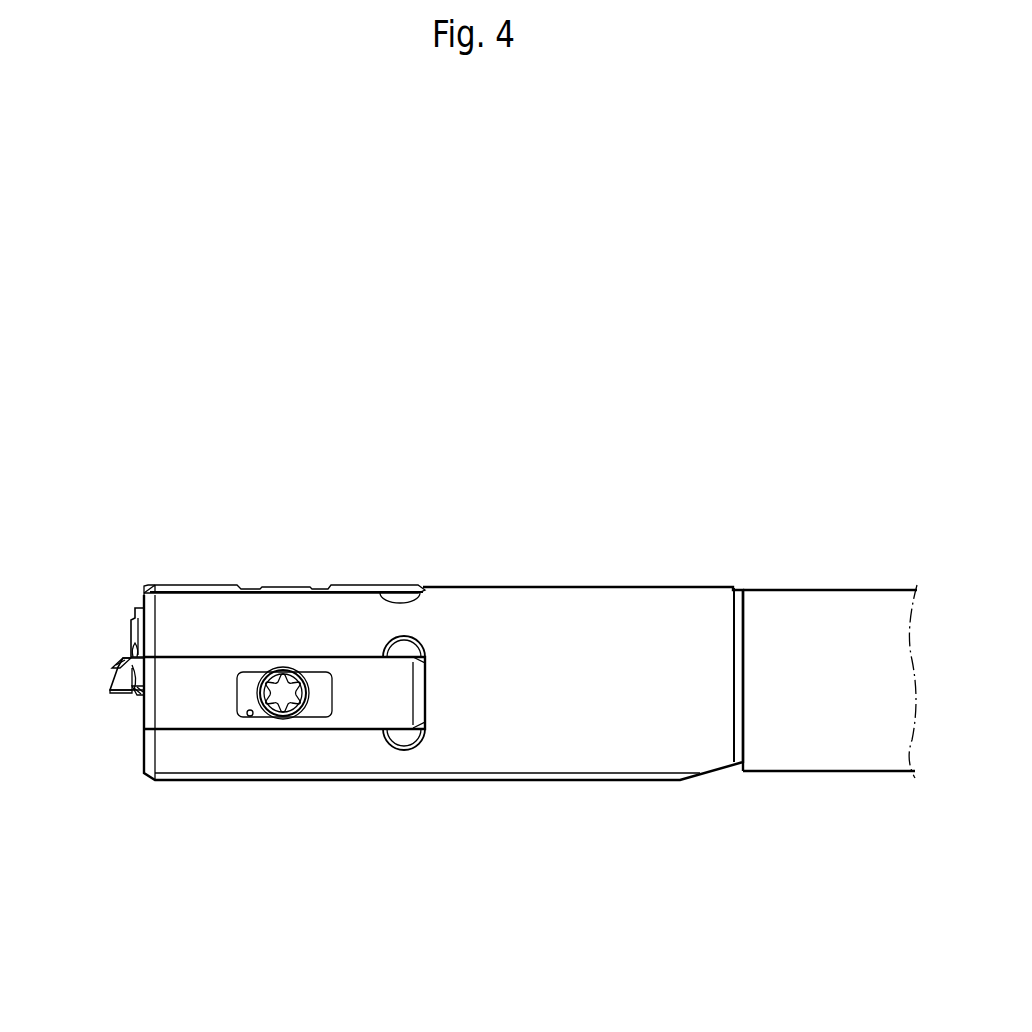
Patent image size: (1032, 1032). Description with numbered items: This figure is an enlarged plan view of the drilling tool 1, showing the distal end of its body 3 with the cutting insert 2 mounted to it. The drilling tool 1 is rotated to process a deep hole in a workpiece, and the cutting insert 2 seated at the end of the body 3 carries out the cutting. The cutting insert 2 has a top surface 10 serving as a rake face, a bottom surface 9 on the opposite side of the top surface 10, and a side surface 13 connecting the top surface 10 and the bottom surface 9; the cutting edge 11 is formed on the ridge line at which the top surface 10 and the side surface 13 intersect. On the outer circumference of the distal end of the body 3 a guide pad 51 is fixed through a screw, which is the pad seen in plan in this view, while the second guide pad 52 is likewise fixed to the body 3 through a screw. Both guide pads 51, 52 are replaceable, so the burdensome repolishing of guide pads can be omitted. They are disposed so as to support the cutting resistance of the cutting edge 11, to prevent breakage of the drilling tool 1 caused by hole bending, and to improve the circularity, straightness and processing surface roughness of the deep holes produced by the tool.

The drilling tool 1 is at (500, 578).
The cutting insert 2 is at (103, 681).
The body 3 is at (642, 586).
The bottom surface 9 is at (124, 658).
The top surface 10 is at (122, 694).
The cutting edge 11 is at (107, 692).
The side surface 13 is at (113, 664).
The guide pad 51 is at (356, 702).
The guide pad 52 is at (356, 584).